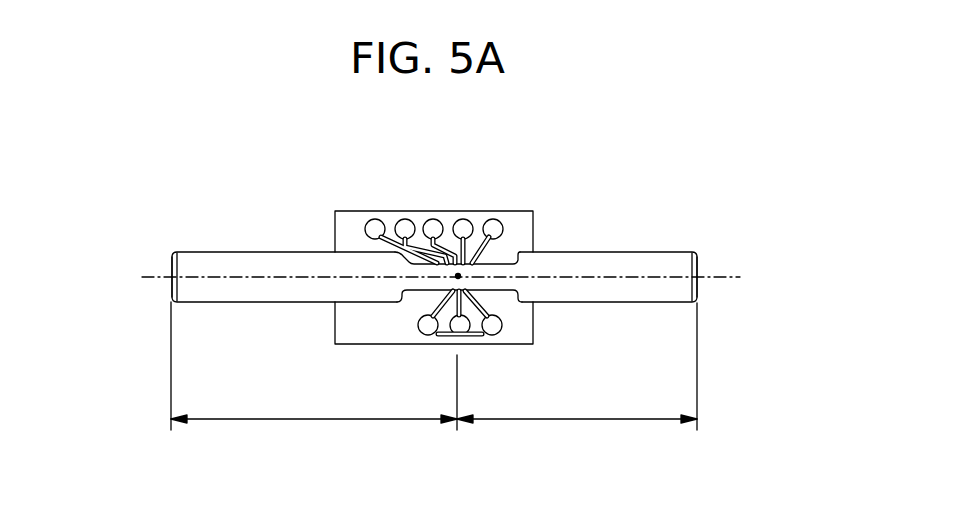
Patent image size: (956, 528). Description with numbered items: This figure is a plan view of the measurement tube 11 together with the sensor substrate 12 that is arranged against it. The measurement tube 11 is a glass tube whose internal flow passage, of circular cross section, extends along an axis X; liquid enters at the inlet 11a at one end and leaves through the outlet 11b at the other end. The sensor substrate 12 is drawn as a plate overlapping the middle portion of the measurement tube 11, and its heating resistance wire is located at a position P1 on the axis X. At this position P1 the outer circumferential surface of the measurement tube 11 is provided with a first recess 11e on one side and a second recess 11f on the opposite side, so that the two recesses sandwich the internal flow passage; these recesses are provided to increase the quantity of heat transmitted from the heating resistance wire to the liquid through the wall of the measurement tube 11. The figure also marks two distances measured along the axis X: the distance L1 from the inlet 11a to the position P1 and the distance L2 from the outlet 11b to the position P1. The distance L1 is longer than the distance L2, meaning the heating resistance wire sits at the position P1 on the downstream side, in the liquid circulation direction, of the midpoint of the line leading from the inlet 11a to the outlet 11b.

The measurement tube 11 is at (663, 258).
The inlet 11a is at (160, 264).
The outlet 11b is at (708, 266).
The first recess 11e is at (506, 249).
The second recess 11f is at (509, 312).
The sensor substrate 12 is at (533, 322).
The position P1 is at (455, 280).
The axis X is at (727, 281).
The distance L1 is at (314, 366).
The distance L2 is at (577, 366).